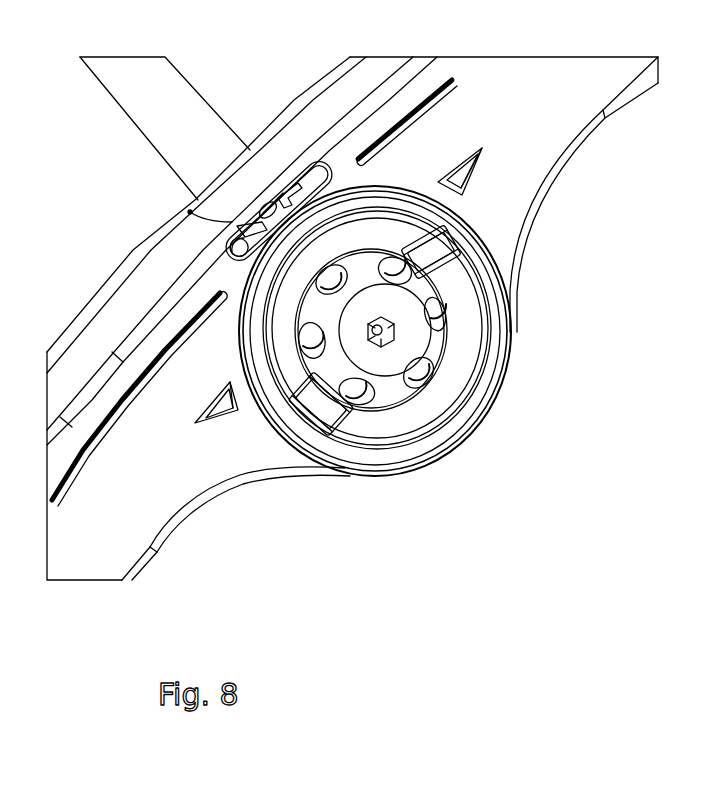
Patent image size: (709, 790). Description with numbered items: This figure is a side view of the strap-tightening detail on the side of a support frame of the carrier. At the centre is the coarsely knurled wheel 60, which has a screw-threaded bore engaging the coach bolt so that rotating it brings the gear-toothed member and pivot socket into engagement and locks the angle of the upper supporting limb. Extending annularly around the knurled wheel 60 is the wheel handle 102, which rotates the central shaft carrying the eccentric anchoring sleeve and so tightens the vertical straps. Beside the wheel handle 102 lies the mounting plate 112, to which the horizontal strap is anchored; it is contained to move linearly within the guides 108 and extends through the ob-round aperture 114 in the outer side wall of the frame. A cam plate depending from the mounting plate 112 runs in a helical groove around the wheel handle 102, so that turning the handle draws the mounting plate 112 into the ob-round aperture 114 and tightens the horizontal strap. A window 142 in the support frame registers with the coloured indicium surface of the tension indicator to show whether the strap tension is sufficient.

The wheel handle 102 is at (460, 316).
The knurled wheel 60 is at (387, 400).
The ob-round aperture 114 is at (474, 165).
The window 142 is at (230, 422).
The guides 108 is at (326, 176).
The mounting plate 112 is at (280, 207).